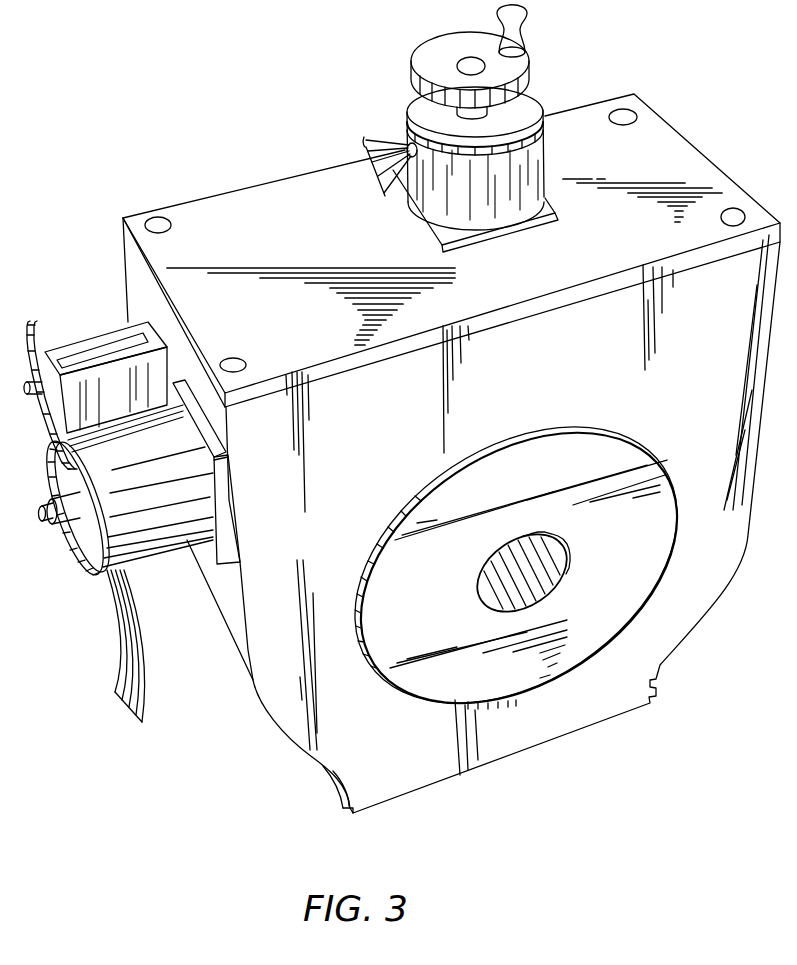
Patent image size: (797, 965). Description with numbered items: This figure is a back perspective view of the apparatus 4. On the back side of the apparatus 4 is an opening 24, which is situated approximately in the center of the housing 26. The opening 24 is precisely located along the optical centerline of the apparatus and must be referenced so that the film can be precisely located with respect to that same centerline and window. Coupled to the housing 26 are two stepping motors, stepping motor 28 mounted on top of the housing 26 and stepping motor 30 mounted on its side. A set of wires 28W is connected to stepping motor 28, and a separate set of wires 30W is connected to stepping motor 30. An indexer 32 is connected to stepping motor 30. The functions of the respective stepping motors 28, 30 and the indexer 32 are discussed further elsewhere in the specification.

The apparatus 4 is at (686, 678).
The opening 24 is at (530, 608).
The housing 26 is at (717, 590).
The stepping motor 28 is at (542, 118).
The set of wires 28W is at (375, 140).
The stepping motor 30 is at (165, 543).
The set of wires 30W is at (123, 647).
The indexer 32 is at (80, 340).